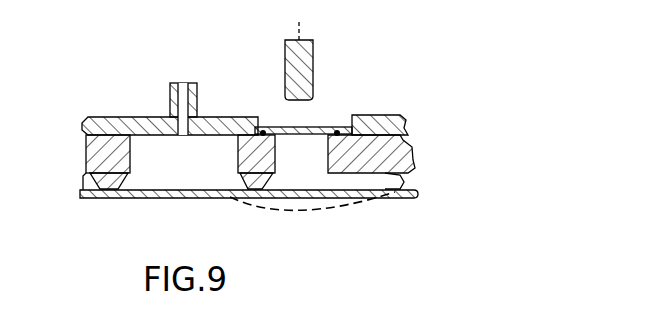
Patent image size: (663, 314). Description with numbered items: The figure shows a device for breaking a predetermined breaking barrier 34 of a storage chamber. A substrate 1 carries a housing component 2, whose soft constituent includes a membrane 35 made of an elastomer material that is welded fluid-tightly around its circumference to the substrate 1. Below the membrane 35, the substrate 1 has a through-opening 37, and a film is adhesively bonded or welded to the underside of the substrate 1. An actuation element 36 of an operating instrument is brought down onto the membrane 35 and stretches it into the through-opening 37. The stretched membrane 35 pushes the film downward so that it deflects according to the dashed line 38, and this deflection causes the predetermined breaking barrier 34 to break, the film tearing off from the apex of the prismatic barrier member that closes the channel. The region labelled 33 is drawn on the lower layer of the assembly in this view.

The substrate 1 is at (93, 157).
The housing component 2 is at (108, 122).
The bottom layer 33 is at (183, 176).
The predetermined breaking barrier 34 is at (243, 181).
The membrane 35 is at (322, 127).
The actuation element 36 is at (298, 63).
The through-opening 37 is at (317, 148).
The dashed line 38 is at (337, 213).